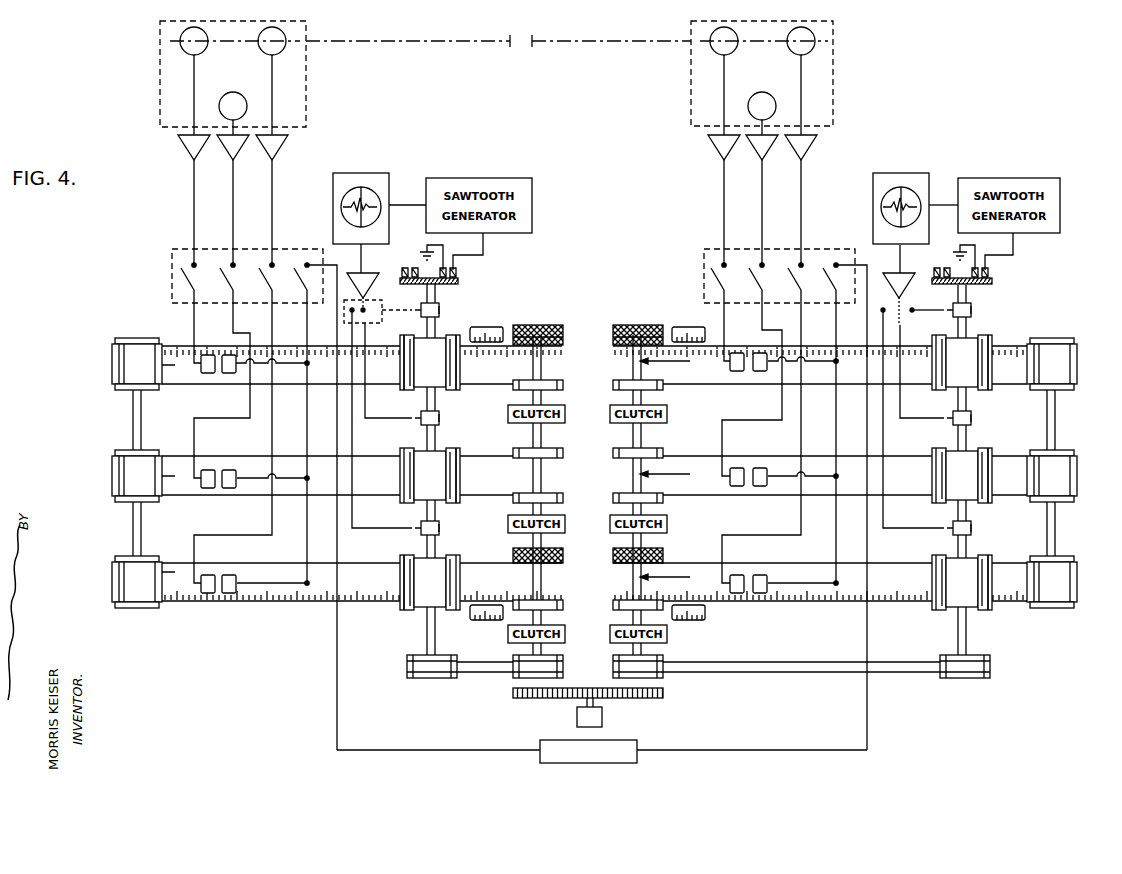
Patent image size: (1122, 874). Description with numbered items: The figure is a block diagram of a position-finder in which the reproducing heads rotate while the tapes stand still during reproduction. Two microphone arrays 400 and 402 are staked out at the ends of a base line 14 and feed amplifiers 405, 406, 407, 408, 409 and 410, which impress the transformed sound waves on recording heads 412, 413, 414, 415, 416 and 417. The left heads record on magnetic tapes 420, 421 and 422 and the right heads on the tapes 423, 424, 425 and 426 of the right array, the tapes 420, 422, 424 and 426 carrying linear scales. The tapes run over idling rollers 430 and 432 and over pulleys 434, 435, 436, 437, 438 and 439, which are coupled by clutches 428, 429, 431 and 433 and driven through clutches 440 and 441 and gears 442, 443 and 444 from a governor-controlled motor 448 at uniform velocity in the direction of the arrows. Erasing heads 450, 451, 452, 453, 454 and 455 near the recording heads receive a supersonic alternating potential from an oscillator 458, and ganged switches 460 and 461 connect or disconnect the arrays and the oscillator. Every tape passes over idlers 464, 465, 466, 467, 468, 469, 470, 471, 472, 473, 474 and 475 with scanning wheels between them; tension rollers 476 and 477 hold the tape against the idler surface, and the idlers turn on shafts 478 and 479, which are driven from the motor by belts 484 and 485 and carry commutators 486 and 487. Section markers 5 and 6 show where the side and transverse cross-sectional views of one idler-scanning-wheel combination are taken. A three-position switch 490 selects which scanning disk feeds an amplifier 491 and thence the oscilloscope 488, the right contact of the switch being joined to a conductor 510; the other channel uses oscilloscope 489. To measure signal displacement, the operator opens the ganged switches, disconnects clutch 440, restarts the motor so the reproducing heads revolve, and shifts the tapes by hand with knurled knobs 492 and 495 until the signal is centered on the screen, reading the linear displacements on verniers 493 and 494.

The base line 14 is at (482, 44).
The microphone array 400 is at (306, 82).
The microphone array 402 is at (833, 80).
The amplifier 405 is at (198, 150).
The amplifier 406 is at (237, 150).
The amplifier 407 is at (276, 150).
The amplifier 408 is at (728, 150).
The amplifier 409 is at (766, 150).
The amplifier 410 is at (805, 150).
The recording head 412 is at (208, 373).
The recording head 413 is at (208, 488).
The recording head 414 is at (208, 593).
The recording head 415 is at (737, 371).
The recording head 416 is at (737, 486).
The recording head 417 is at (737, 593).
The magnetic tape 420 is at (110, 368).
The magnetic tape 421 is at (110, 478).
The magnetic tape 422 is at (115, 606).
The magnetic tape 423 is at (820, 365).
The magnetic tape 424 is at (1077, 380).
The magnetic tape 425 is at (1077, 490).
The magnetic tape 426 is at (1077, 598).
The clutch 428 is at (565, 418).
The clutch 429 is at (565, 528).
The idling roller 430 is at (125, 338).
The clutch 431 is at (662, 420).
The idling roller 432 is at (1050, 338).
The clutch 433 is at (662, 530).
The pulley 434 is at (563, 388).
The pulley 435 is at (563, 505).
The pulley 436 is at (563, 608).
The pulley 437 is at (655, 390).
The pulley 438 is at (655, 505).
The pulley 439 is at (555, 602).
The clutch 440 is at (565, 638).
The clutch 441 is at (662, 640).
The gear 442 is at (513, 695).
The gear 443 is at (585, 702).
The gear 444 is at (663, 693).
The motor 448 is at (602, 718).
The erasing head 450 is at (229, 373).
The erasing head 451 is at (229, 488).
The erasing head 452 is at (229, 593).
The erasing head 453 is at (760, 371).
The erasing head 454 is at (760, 486).
The erasing head 455 is at (760, 593).
The oscillator 458 is at (637, 758).
The ganged switch 460 is at (176, 251).
The ganged switch 461 is at (706, 251).
The idler 464 is at (440, 335).
The idler 465 is at (416, 390).
The idler 466 is at (414, 455).
The idler 467 is at (452, 503).
The idler 468 is at (414, 560).
The idler 469 is at (403, 610).
The idler 470 is at (972, 335).
The idler 471 is at (978, 390).
The idler 472 is at (946, 455).
The idler 473 is at (978, 503).
The idler 474 is at (946, 560).
The idler 475 is at (978, 610).
The tension roller 476 is at (403, 390).
The tension roller 477 is at (458, 390).
The shaft 478 is at (412, 518).
The shaft 479 is at (945, 518).
The belt 484 is at (470, 667).
The belt 485 is at (800, 672).
The commutator 486 is at (458, 280).
The commutator 487 is at (992, 280).
The oscilloscope 488 is at (375, 173).
The oscilloscope 489 is at (915, 173).
The three-position switch 490 is at (345, 300).
The amplifier 491 is at (370, 282).
The knurled knob 492 is at (530, 325).
The vernier plate 493 is at (486, 327).
The vernier 494 is at (478, 620).
The knurled knob 495 is at (513, 550).
The conductor 510 is at (380, 318).
The shaft 6 is at (450, 403).
The pickup 5 is at (484, 363).